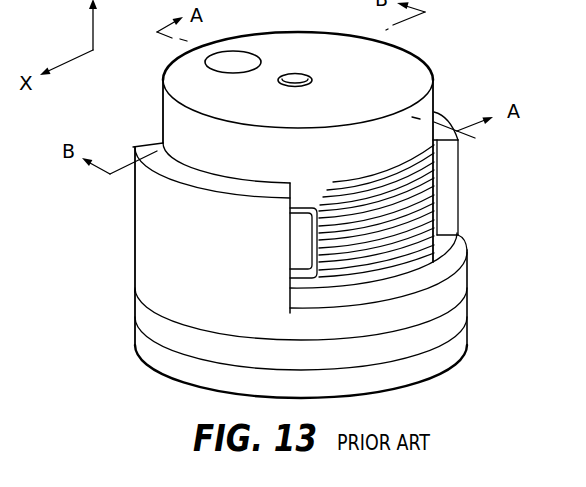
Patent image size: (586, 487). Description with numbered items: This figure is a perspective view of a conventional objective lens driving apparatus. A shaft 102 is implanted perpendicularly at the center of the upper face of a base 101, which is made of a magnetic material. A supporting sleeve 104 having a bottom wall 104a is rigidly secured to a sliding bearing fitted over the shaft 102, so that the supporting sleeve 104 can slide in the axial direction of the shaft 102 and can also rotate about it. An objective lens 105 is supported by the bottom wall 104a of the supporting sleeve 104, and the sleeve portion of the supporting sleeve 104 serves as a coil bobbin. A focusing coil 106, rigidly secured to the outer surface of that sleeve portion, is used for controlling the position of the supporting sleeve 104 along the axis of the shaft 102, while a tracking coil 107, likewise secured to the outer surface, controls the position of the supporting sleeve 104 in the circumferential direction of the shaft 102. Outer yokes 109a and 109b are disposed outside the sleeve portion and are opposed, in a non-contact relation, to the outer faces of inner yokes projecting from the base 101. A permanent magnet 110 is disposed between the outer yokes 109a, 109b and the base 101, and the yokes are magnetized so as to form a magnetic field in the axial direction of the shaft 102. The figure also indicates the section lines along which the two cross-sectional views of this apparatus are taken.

The base 101 is at (462, 342).
The shaft 102 is at (296, 75).
The supporting sleeve 104 is at (418, 70).
The bottom wall 104a is at (166, 82).
The objective lens 105 is at (236, 56).
The focusing coil 106 is at (437, 222).
The tracking coil 107 is at (290, 267).
The outer yoke 109a is at (137, 238).
The outer yoke 109b is at (452, 194).
The permanent magnet 110 is at (188, 326).